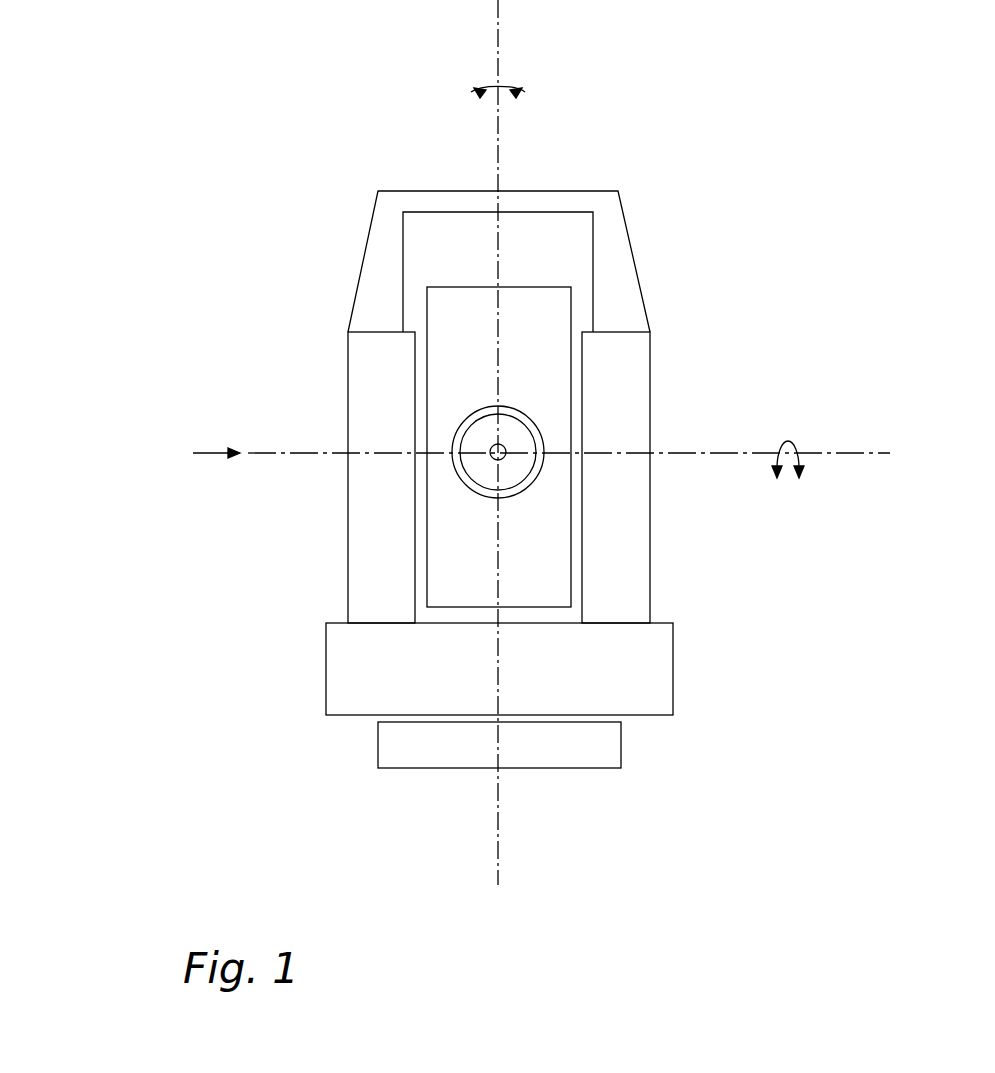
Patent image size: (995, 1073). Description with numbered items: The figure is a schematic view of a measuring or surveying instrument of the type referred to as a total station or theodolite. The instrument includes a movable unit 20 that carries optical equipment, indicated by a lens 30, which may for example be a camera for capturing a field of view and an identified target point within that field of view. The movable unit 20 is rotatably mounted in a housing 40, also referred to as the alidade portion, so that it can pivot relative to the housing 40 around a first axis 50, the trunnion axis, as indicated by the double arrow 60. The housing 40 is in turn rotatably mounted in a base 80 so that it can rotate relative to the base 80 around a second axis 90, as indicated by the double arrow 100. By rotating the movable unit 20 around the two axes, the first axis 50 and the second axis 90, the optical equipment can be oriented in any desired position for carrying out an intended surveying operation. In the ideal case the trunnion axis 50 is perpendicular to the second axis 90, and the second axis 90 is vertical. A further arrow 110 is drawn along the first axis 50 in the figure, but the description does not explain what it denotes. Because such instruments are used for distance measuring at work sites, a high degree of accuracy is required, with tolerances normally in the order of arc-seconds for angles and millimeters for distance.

The movable unit 20 is at (550, 302).
The lens 30 is at (487, 430).
The housing 40 is at (646, 343).
The first axis 50 is at (272, 453).
The double arrow 60 is at (792, 428).
The base 80 is at (613, 742).
The second axis 90 is at (498, 145).
The double arrow 100 is at (520, 83).
The viewing direction 110 is at (217, 453).